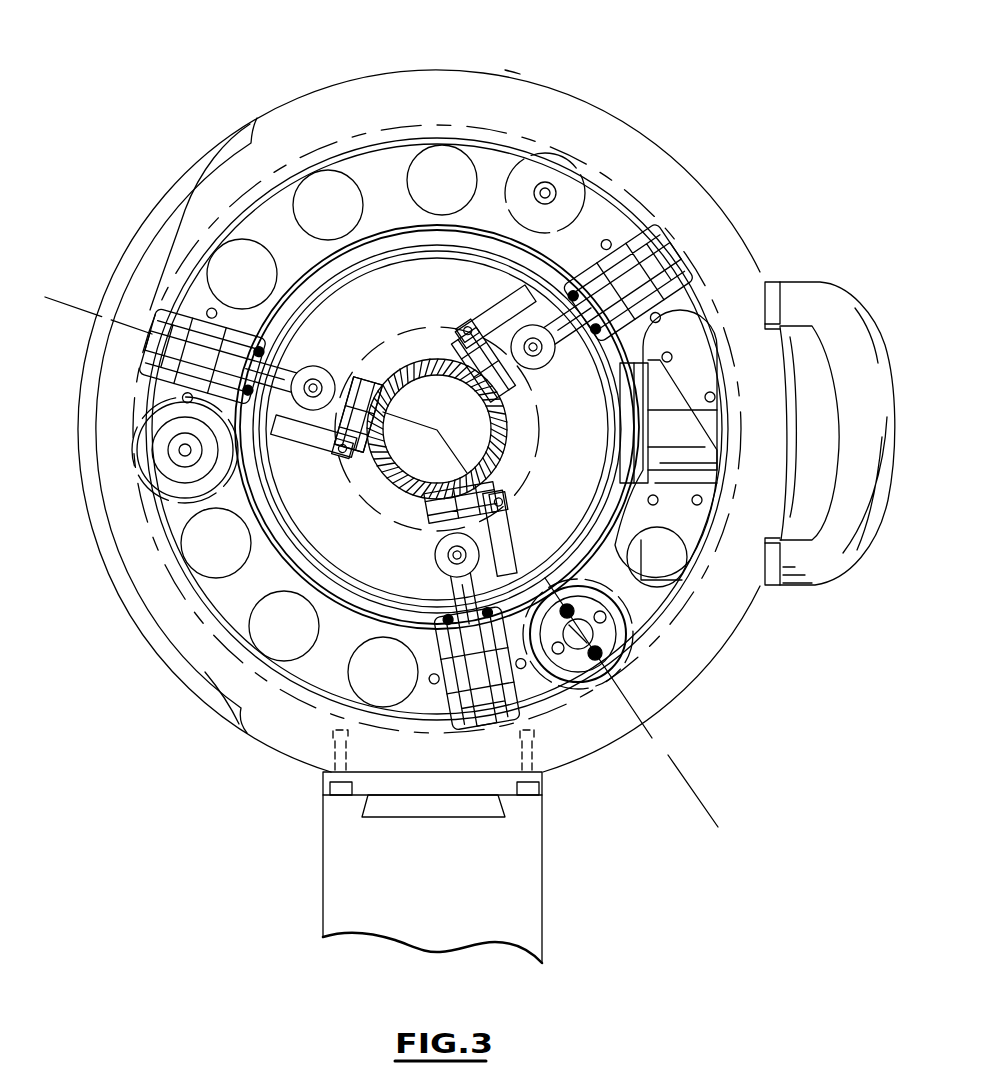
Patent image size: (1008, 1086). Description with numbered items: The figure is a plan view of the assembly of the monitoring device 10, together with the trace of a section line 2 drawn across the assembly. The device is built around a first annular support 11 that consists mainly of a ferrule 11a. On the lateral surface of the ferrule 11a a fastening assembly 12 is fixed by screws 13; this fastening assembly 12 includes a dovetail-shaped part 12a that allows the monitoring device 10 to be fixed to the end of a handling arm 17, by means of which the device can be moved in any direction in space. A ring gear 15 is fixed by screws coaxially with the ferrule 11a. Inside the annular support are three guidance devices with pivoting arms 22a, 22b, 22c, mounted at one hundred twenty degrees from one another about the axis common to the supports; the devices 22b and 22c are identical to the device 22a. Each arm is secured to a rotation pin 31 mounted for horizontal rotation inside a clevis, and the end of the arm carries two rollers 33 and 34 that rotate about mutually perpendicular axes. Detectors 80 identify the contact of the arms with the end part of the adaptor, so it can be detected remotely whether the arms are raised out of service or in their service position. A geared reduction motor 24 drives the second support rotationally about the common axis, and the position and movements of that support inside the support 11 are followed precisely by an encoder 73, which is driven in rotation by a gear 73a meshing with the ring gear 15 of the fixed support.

The monitoring device 10 is at (348, 64).
The first annular support 11 is at (155, 676).
The ferrule 11a is at (504, 72).
The ring gear 15 is at (505, 147).
The guidance device with pivoting arms 22a is at (295, 325).
The guidance device with pivoting arms 22b is at (520, 692).
The guidance device with pivoting arms 22c is at (614, 218).
The rotation pin 31 is at (180, 313).
The roller 33 is at (350, 372).
The roller 34 is at (392, 400).
The detectors 80 is at (468, 330).
The encoder 73 is at (175, 455).
The gear 73a is at (175, 497).
The geared reduction motor 24 is at (600, 638).
The fastening assembly 12 is at (422, 785).
The dovetail-shaped part 12a is at (397, 808).
The screws 13 is at (342, 787).
The handling arm 17 is at (518, 908).
The section line 2- 2 is at (59, 313).